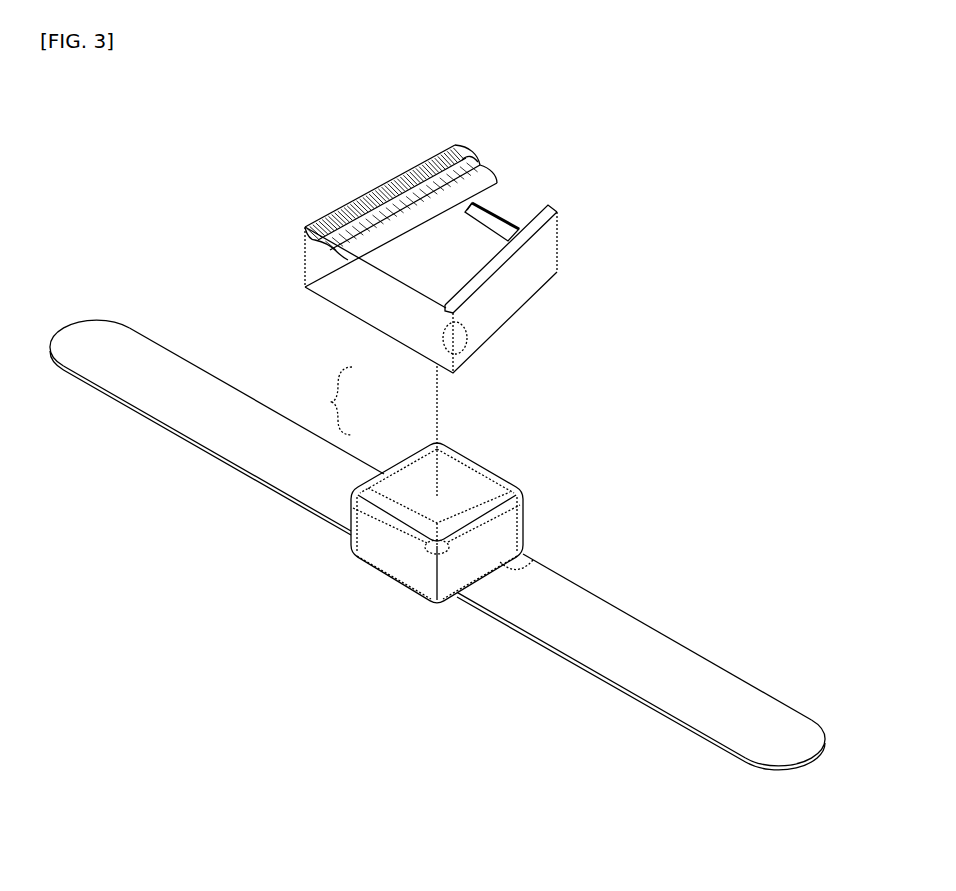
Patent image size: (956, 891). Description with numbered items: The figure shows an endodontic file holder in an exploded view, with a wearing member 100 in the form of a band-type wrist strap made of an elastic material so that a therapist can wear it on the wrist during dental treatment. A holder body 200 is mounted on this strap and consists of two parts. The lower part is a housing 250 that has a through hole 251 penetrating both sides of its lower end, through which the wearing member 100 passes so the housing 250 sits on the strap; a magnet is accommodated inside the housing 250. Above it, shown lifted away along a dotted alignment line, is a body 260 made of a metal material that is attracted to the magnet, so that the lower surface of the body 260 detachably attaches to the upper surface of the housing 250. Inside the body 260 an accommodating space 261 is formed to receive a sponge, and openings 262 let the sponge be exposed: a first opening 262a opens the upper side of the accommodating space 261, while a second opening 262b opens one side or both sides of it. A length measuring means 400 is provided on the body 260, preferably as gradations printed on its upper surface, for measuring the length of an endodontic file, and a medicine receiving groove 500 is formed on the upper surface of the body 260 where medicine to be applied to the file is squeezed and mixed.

The wearing member 100 is at (207, 437).
The holder body 200 is at (322, 401).
The housing 250 is at (415, 452).
The through hole 251 is at (533, 560).
The body 260 is at (375, 333).
The accommodating space 261 is at (462, 238).
The openings 262 is at (563, 279).
The first opening 262a is at (560, 223).
The second opening 262b is at (463, 353).
The length measuring means 400 is at (463, 168).
The medicine receiving groove 500 is at (472, 170).